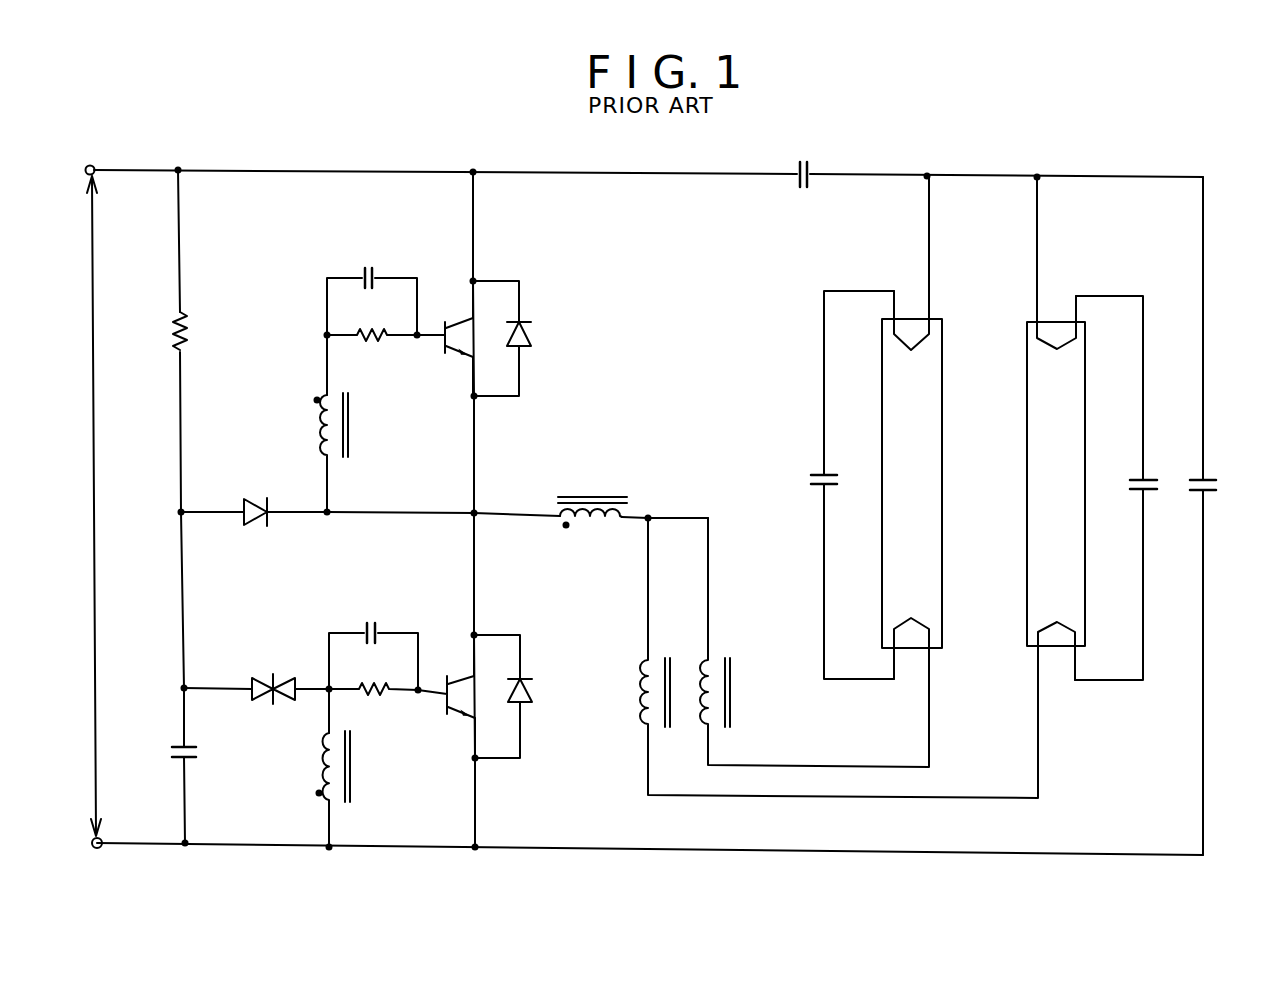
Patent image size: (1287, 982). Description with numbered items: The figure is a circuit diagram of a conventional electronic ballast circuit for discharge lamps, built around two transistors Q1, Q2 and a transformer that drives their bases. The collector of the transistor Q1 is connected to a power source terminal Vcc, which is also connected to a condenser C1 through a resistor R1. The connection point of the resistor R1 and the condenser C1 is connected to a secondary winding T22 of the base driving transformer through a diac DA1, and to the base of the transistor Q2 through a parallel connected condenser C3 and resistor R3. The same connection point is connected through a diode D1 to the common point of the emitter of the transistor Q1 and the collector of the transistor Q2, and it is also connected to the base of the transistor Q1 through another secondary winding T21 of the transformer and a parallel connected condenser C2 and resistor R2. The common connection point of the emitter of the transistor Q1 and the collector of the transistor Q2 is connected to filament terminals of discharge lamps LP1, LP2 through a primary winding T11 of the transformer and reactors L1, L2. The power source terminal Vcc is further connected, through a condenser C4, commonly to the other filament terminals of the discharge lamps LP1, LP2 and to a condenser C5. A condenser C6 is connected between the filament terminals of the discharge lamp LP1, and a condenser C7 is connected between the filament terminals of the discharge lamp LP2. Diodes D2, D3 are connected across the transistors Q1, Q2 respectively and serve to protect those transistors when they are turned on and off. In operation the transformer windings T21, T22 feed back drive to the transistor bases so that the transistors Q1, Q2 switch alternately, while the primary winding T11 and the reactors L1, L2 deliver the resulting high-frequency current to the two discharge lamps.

The power source terminal Vcc is at (96, 506).
The resistor R1 is at (199, 331).
The condenser C1 is at (199, 755).
The diode D1 is at (254, 500).
The diac DA1 is at (256, 677).
The condenser C2 is at (372, 289).
The resistor R2 is at (372, 324).
The secondary winding T21 is at (309, 423).
The transistor Q1 is at (460, 338).
The diode D2 is at (519, 338).
The condenser C3 is at (373, 644).
The resistor R3 is at (373, 678).
The secondary winding T22 is at (311, 768).
The transistor Q2 is at (462, 696).
The diode D3 is at (520, 696).
The primary winding T11 is at (593, 499).
The reactor L2 is at (821, 658).
The reactor L1 is at (802, 642).
The condenser C4 is at (799, 162).
The discharge lamp LP1 is at (912, 427).
The condenser C6 is at (835, 485).
The discharge lamp LP2 is at (1056, 428).
The condenser C7 is at (1116, 488).
The condenser C5 is at (1189, 516).